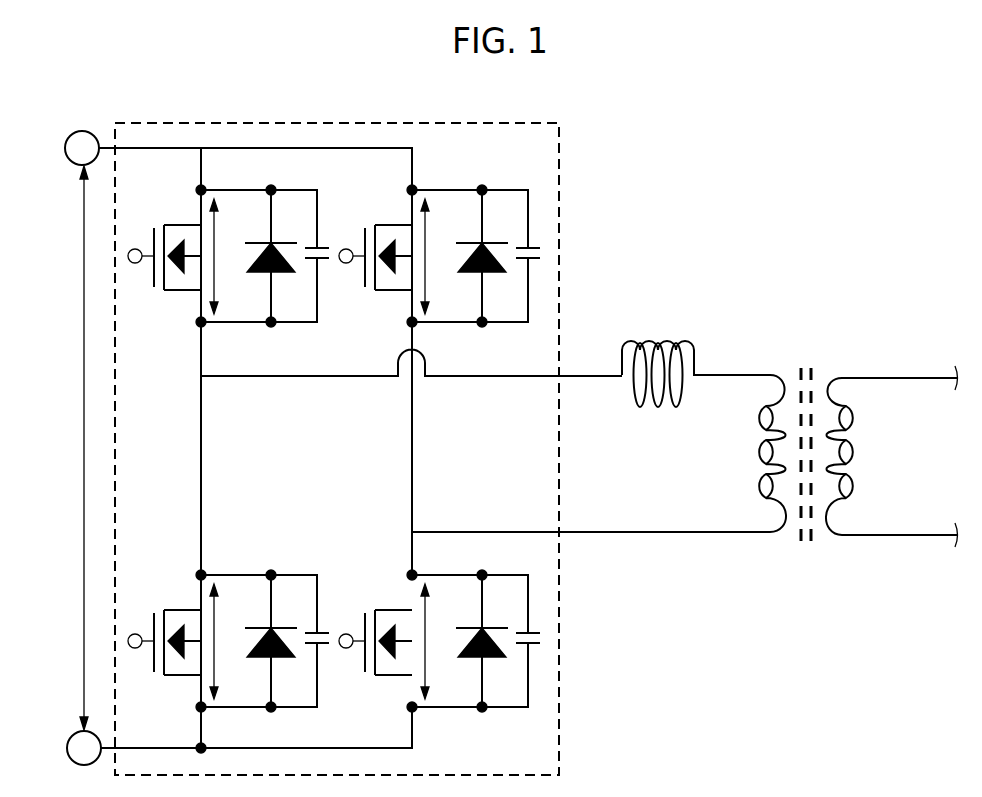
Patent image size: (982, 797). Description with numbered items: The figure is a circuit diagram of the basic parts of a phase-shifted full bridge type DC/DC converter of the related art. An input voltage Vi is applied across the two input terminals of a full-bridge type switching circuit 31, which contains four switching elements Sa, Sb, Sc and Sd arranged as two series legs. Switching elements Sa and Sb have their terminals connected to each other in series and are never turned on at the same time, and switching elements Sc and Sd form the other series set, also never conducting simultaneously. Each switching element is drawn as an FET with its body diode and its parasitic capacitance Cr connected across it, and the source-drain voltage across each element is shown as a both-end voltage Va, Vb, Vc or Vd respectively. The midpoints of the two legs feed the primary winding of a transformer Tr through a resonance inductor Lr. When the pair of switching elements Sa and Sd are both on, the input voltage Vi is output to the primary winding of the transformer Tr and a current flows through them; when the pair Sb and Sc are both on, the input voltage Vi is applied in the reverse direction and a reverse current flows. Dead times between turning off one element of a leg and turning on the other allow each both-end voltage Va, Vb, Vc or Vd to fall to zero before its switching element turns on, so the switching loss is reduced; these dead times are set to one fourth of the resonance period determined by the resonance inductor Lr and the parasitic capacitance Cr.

The full-bridge type switching circuit 31 is at (560, 153).
The switching element Sa is at (164, 242).
The switching element Sb is at (164, 627).
The switching element Sc is at (375, 242).
The switching element Sd is at (375, 627).
The both-end voltage Va is at (218, 292).
The both-end voltage Vb is at (218, 677).
The both-end voltage Vc is at (429, 292).
The both-end voltage Vd is at (429, 677).
The parasitic capacitance Cr is at (313, 262).
The resonance inductor Lr is at (693, 328).
The transformer Tr is at (821, 361).
The input voltage Vi is at (78, 448).